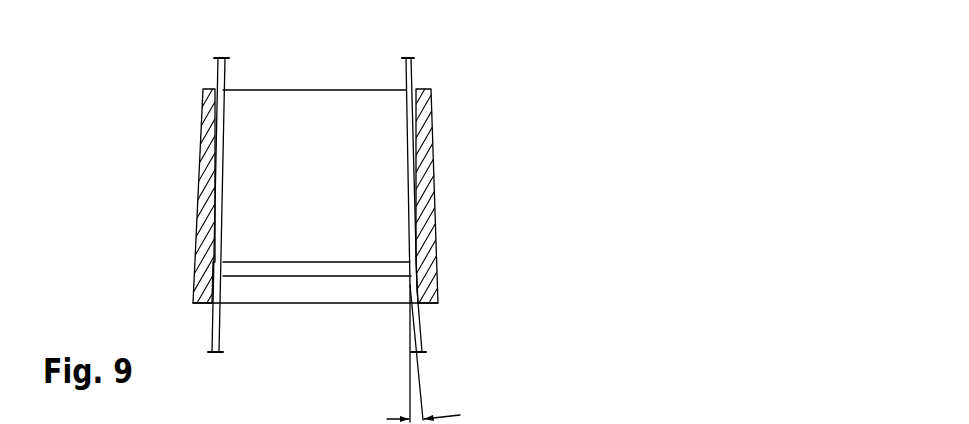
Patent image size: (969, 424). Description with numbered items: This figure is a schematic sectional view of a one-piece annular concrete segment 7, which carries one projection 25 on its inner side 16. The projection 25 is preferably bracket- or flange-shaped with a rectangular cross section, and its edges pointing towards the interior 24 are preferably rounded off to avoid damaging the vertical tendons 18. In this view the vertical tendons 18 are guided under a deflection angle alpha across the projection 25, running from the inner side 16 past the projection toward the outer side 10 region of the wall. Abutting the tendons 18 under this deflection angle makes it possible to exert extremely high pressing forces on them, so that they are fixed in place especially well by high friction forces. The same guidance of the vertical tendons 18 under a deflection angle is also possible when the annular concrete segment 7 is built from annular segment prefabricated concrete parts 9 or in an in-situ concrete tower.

The annular concrete segment 7 is at (496, 195).
The inner side 16 is at (310, 155).
The vertical tendons 18 is at (365, 215).
The interior 24 is at (330, 179).
The projection 25 is at (317, 334).
The outer side 10 is at (577, 415).
The annular segment prefabricated concrete part 9 is at (777, 416).